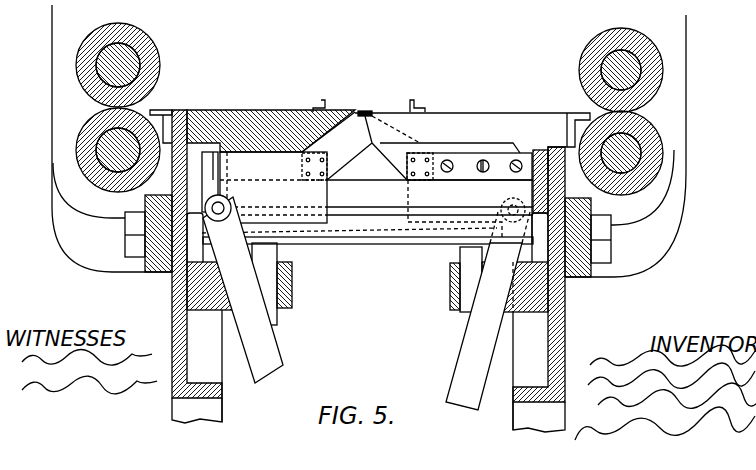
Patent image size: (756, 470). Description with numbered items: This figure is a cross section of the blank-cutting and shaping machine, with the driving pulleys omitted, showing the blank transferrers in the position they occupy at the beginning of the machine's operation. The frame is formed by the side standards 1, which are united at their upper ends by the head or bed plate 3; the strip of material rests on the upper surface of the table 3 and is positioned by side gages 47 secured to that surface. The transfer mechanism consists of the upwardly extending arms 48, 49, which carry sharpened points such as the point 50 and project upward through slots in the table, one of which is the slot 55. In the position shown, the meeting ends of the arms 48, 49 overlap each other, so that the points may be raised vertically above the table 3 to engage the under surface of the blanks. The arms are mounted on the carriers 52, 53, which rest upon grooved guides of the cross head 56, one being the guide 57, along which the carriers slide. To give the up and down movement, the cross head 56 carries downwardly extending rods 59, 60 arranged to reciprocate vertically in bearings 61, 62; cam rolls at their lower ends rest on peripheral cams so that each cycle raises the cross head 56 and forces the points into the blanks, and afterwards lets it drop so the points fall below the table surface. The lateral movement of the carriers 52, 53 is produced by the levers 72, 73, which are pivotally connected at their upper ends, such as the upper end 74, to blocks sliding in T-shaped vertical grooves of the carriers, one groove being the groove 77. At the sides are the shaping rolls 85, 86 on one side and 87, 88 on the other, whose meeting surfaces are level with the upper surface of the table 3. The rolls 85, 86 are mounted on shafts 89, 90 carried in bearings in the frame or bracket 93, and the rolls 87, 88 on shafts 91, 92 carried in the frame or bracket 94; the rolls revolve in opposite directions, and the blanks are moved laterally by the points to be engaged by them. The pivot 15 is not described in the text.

The side standards 1 is at (170, 292).
The bed plate 3 is at (238, 100).
The pivot 15 is at (511, 198).
The side gages 47 is at (325, 100).
The upwardly extending arm 48 is at (329, 133).
The upwardly extending arm 49 is at (391, 157).
The sharpened point 50 is at (380, 103).
The carrier 52 is at (273, 187).
The carrier 53 is at (470, 170).
The slot 55 is at (513, 107).
The cross head 56 is at (378, 241).
The grooved guide 57 is at (430, 208).
The downwardly extending rod 59 is at (268, 258).
The downwardly extending rod 60 is at (460, 257).
The bearing 61 is at (287, 297).
The bearing 62 is at (450, 290).
The lever 72 is at (263, 343).
The lever 73 is at (463, 347).
The upper end of lever 74 is at (222, 208).
The T-shaped vertical groove 77 is at (218, 165).
The shaping roll 85 is at (148, 44).
The shaping roll 86 is at (93, 120).
The shaping roll 87 is at (664, 28).
The shaping roll 88 is at (660, 132).
The shaft 89 is at (130, 62).
The shaft 90 is at (100, 147).
The shaft 91 is at (604, 62).
The shaft 92 is at (631, 160).
The frame or bracket 93 is at (67, 237).
The frame or bracket 94 is at (664, 230).